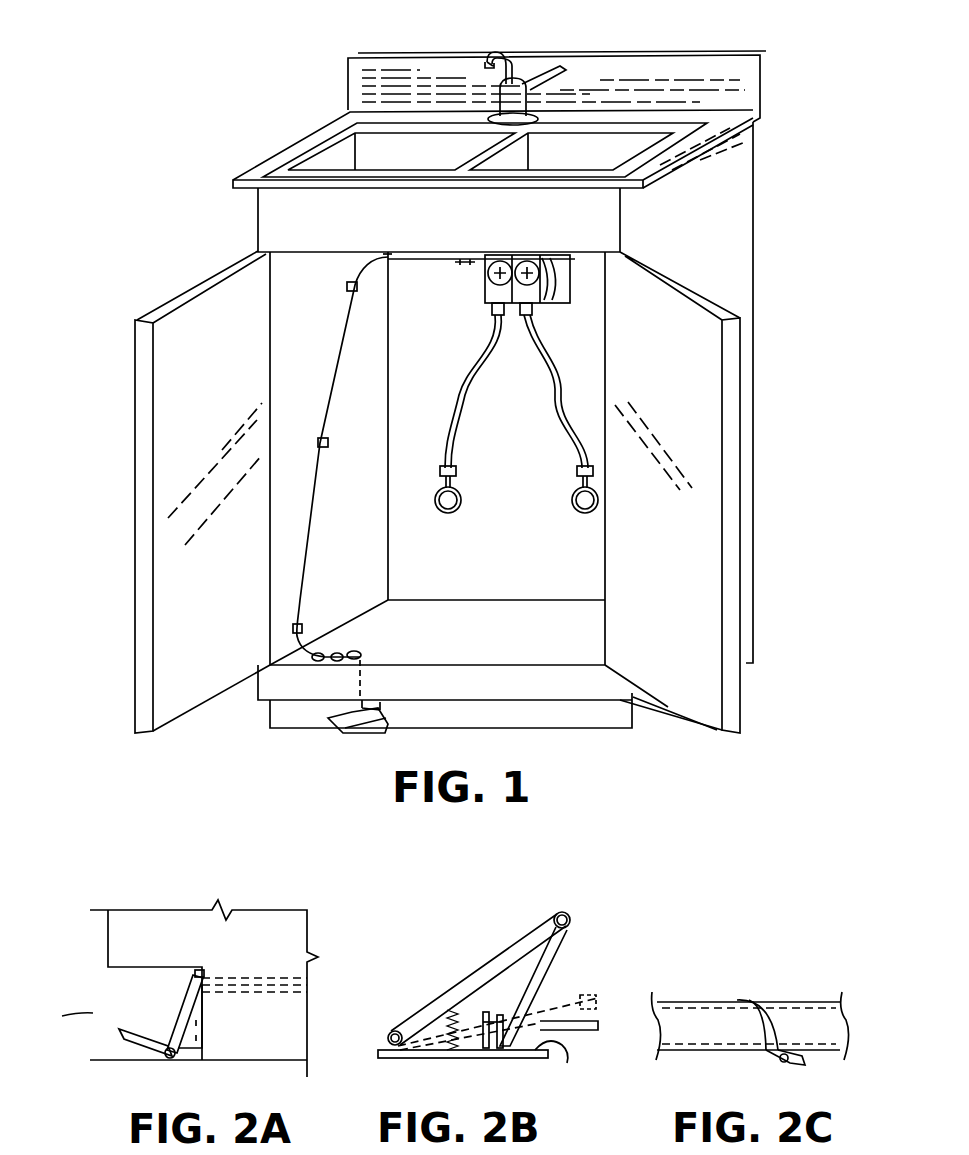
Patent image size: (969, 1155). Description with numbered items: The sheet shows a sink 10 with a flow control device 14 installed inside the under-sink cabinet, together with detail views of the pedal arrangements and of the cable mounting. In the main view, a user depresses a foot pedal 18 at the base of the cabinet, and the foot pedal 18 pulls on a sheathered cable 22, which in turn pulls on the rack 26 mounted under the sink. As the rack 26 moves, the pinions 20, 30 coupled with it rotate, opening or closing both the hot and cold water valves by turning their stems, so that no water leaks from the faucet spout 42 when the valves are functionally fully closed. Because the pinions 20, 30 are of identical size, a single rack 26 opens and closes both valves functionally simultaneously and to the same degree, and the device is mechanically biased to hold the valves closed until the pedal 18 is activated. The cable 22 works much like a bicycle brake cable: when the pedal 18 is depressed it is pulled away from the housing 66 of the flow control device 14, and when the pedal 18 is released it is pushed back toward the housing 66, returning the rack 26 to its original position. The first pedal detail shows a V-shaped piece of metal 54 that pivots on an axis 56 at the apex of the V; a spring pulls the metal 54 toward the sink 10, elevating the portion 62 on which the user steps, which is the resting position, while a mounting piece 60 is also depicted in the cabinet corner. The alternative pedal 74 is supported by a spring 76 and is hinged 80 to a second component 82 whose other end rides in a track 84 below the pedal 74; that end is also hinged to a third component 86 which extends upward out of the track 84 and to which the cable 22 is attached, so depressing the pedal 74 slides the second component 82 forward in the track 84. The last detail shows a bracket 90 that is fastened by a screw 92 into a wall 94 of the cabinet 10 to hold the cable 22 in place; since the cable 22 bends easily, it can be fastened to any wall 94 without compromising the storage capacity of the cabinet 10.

In FIG. 1, the sink 10 is at (774, 150).
In FIG. 2A, the sink 10 is at (265, 910).
In FIG. 1, the flow control device 14 is at (444, 330).
In FIG. 1, the foot pedal 18 is at (350, 740).
In FIG. 2A, the foot pedal 18 is at (92, 1009).
In FIG. 1, the pinion 20 is at (486, 283).
In FIG. 1, the sheathered cable 22 is at (318, 548).
In FIG. 2A, the sheathered cable 22 is at (250, 985).
In FIG. 2B, the sheathered cable 22 is at (585, 1032).
In FIG. 2C, the sheathered cable 22 is at (804, 995).
In FIG. 1, the rack 26 is at (572, 303).
In FIG. 1, the pinion 30 is at (543, 316).
In FIG. 1, the faucet spout 42 is at (522, 46).
In FIG. 2A, the V-shaped piece of metal 54 is at (177, 1022).
In FIG. 2A, the axis 56 is at (172, 1060).
In FIG. 2A, the mounting bracket 60 is at (197, 1016).
In FIG. 2A, the portion on which the user steps 62 is at (130, 1046).
In FIG. 1, the housing 66 is at (572, 282).
In FIG. 2B, the pedal 74 is at (513, 942).
In FIG. 2B, the spring 76 is at (465, 1052).
In FIG. 2B, the hinge 80 is at (390, 1030).
In FIG. 2B, the second component 82 is at (547, 970).
In FIG. 2B, the track 84 is at (557, 1069).
In FIG. 2B, the third component 86 is at (485, 1015).
In FIG. 1, the bracket 90 is at (329, 443).
In FIG. 2C, the bracket 90 is at (752, 1000).
In FIG. 2C, the screw 92 is at (800, 1060).
In FIG. 1, the wall 94 is at (358, 500).